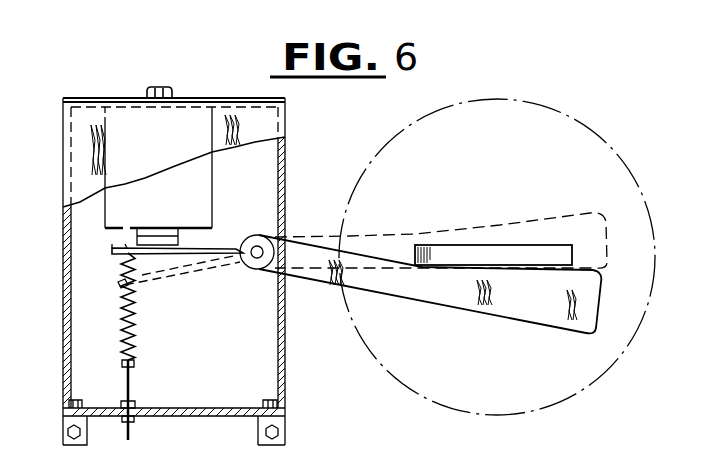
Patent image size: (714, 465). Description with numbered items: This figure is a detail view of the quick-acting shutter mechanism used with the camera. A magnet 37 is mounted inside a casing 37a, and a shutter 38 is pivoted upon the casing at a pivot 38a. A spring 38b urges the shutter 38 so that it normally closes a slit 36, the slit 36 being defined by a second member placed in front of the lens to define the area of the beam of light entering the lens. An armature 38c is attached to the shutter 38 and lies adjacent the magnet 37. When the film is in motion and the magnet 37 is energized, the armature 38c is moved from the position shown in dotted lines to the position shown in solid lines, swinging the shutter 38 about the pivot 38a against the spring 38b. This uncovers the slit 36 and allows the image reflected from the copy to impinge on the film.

The slit 36 is at (507, 254).
The magnet 37 is at (170, 212).
The casing 37a is at (63, 322).
The shutter 38 is at (356, 286).
The pivot 38a is at (256, 269).
The spring 38b is at (136, 331).
The armature 38c is at (114, 252).